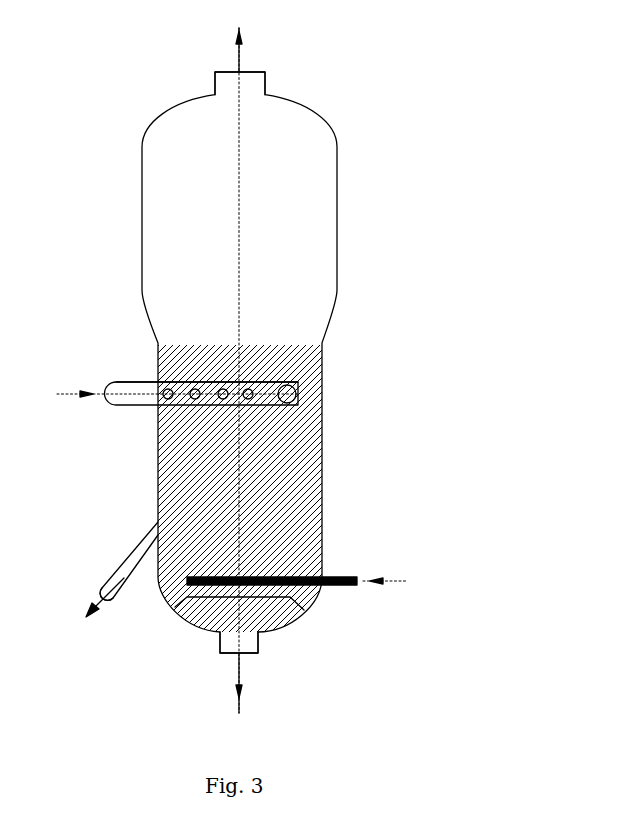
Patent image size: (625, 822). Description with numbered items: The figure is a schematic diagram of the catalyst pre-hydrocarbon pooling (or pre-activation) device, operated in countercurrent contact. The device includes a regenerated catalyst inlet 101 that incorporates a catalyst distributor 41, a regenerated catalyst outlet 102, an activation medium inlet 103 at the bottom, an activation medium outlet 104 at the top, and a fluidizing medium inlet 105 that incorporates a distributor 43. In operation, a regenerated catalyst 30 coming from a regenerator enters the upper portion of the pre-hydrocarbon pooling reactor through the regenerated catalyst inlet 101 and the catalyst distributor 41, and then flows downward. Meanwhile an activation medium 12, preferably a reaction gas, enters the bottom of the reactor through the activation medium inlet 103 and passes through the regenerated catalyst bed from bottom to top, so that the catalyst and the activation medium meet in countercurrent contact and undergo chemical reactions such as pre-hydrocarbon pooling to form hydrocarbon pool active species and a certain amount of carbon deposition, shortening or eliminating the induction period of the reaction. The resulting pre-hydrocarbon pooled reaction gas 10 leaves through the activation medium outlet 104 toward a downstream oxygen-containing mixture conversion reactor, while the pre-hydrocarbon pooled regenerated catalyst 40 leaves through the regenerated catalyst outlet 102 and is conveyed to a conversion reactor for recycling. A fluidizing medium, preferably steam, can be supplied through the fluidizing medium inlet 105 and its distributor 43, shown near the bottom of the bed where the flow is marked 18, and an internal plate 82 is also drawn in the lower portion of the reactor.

The pre-hydrocarbon pooled reaction gas 10 is at (240, 40).
The activation medium 12 is at (240, 694).
The fluid inlet flow 18 is at (396, 581).
The regenerated catalyst 30 is at (166, 393).
The pre-hydrocarbon pooled regenerated catalyst 40 is at (107, 580).
The catalyst distributor 41 is at (193, 402).
The distributor 43 is at (311, 566).
The distributor plate 82 is at (288, 598).
The regenerated catalyst inlet 101 is at (127, 382).
The regenerated catalyst outlet 102 is at (124, 591).
The activation medium inlet 103 is at (258, 647).
The activation medium outlet 104 is at (265, 77).
The fluidizing medium inlet 105 is at (343, 578).